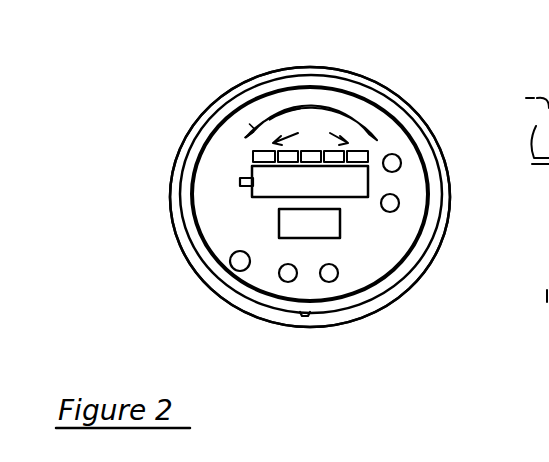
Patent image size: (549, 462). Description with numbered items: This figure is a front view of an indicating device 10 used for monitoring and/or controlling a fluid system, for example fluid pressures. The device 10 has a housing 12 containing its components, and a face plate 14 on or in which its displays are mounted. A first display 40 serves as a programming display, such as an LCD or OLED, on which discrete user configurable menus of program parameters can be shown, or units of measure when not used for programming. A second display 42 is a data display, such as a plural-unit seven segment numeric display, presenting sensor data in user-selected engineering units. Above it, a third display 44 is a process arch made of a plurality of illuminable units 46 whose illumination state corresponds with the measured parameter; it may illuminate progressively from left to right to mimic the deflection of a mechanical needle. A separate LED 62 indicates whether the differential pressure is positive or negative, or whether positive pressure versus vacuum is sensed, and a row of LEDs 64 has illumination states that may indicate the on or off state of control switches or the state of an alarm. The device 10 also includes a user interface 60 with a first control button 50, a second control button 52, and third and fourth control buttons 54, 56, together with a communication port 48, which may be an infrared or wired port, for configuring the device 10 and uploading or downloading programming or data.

The indicating device 10 is at (160, 269).
The housing 12 is at (377, 77).
The face plate 14 is at (382, 257).
The first display 40 is at (283, 220).
The second display 42 is at (368, 183).
The third display 44 is at (246, 131).
The illuminable units 46 is at (278, 113).
The communication port 48 is at (234, 271).
The first control button 50 is at (288, 282).
The second control button 52 is at (330, 282).
The third control button 54 is at (398, 157).
The fourth control button 56 is at (397, 208).
The user interface 60 is at (355, 277).
The LED 62 is at (238, 184).
The LEDs 64 is at (310, 134).